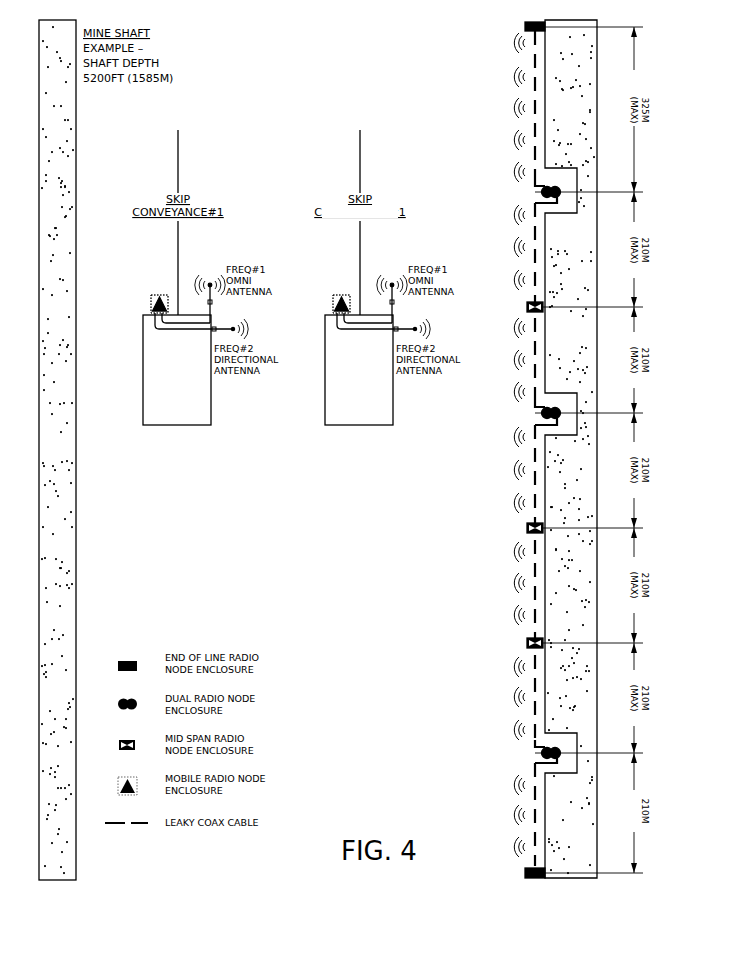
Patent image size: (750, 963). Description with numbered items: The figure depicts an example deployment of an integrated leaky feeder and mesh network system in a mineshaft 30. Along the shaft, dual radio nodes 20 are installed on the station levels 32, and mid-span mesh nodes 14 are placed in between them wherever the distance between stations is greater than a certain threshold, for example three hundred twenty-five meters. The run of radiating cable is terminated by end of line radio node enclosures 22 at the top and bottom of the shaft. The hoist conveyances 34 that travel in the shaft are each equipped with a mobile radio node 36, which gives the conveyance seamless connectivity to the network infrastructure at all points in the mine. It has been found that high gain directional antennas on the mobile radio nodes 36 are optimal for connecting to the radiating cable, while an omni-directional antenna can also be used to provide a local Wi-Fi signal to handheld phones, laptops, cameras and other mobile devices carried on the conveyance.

The mineshaft 30 is at (328, 101).
The end of line radio node enclosure 22 is at (525, 26).
The dual radio nodes 20 is at (542, 192).
The mid-span mesh nodes 14 is at (527, 305).
The station levels 32 is at (577, 181).
The hoist conveyances 34 is at (178, 407).
The mobile radio nodes 36 is at (233, 260).